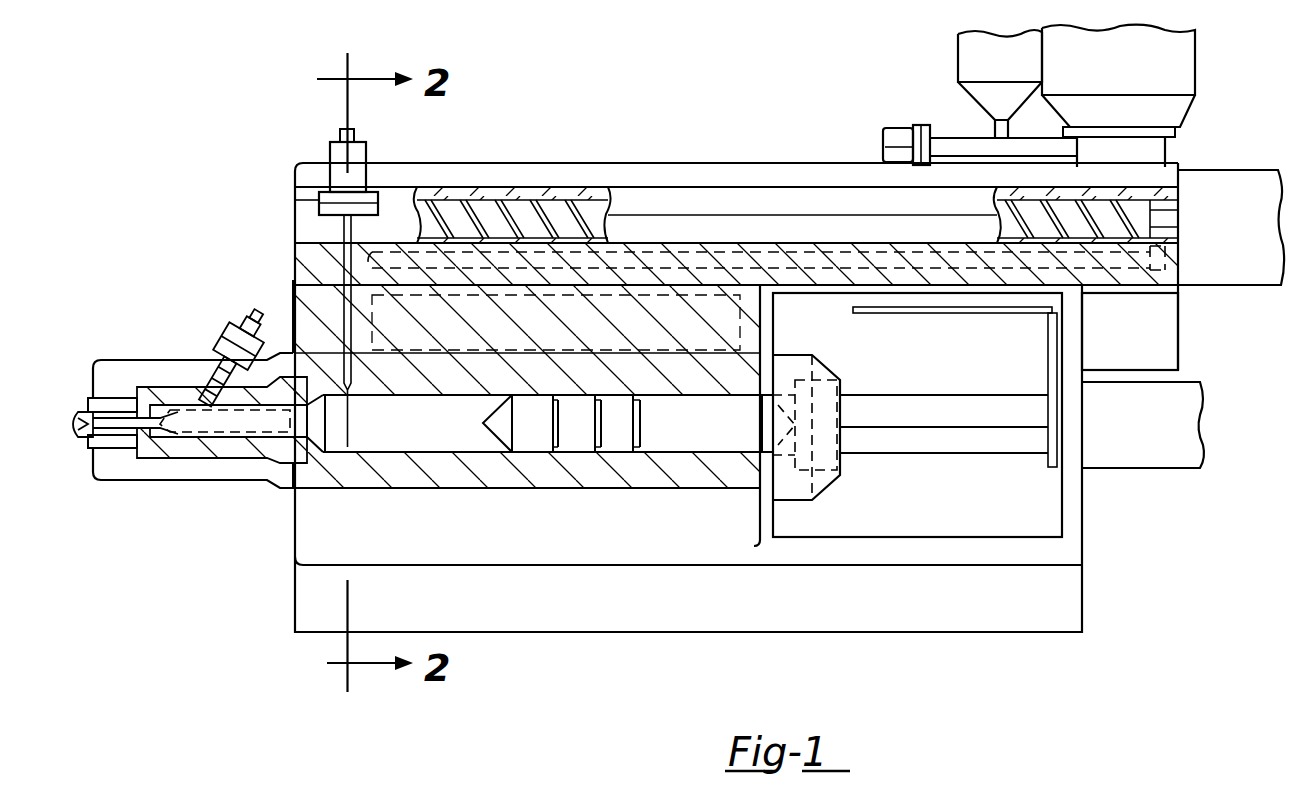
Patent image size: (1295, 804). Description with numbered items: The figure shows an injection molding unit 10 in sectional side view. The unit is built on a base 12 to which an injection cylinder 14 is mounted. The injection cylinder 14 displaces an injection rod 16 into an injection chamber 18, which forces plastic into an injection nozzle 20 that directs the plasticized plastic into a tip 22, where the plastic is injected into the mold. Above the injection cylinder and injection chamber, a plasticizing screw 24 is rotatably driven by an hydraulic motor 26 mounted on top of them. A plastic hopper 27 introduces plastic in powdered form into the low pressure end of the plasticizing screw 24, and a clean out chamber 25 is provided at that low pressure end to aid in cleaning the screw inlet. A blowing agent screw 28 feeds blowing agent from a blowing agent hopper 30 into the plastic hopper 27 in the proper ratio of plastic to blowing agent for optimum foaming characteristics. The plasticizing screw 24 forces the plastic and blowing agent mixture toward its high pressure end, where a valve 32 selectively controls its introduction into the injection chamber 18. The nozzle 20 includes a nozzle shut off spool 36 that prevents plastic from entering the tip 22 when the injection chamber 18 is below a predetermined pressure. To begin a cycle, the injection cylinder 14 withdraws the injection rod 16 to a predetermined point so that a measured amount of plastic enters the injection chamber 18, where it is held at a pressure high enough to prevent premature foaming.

The injection molding unit 10 is at (758, 90).
The base 12 is at (618, 615).
The injection cylinder 14 is at (1143, 440).
The injection rod 16 is at (693, 440).
The injection chamber 18 is at (418, 435).
The injection nozzle 20 is at (190, 268).
The tip 22 is at (72, 412).
The plasticizing screw 24 is at (540, 215).
The clean out chamber 25 is at (1166, 266).
The hydraulic motor 26 is at (1240, 243).
The plastic hopper 27 is at (1131, 73).
The blowing agent screw 28 is at (946, 133).
The blowing agent hopper 30 is at (1010, 73).
The valve 32 is at (392, 154).
The nozzle shut off spool 36 is at (100, 450).